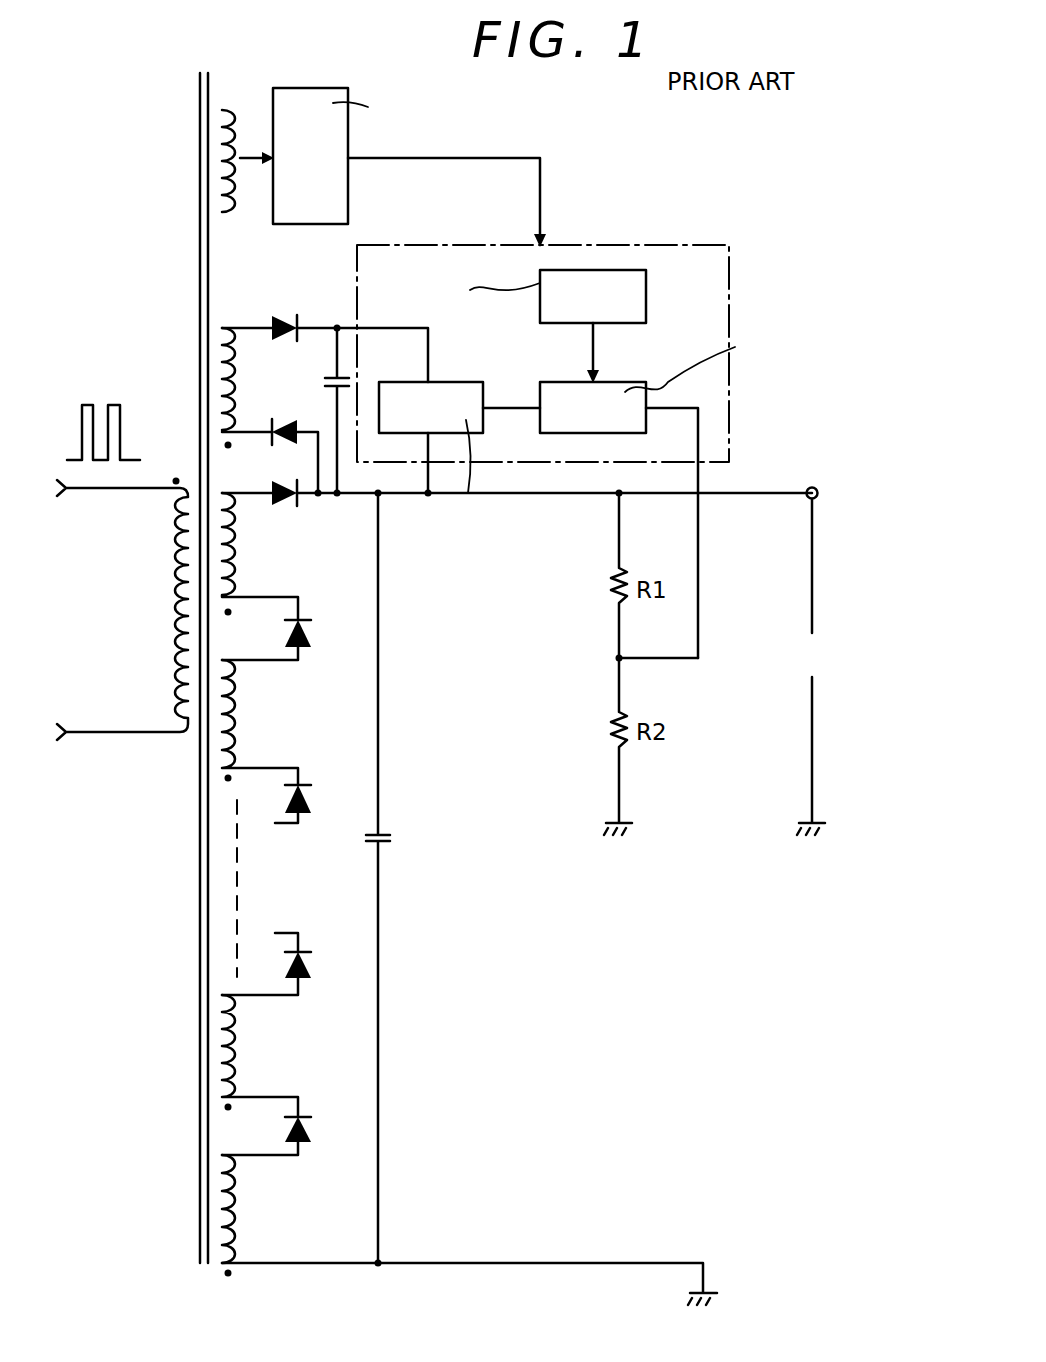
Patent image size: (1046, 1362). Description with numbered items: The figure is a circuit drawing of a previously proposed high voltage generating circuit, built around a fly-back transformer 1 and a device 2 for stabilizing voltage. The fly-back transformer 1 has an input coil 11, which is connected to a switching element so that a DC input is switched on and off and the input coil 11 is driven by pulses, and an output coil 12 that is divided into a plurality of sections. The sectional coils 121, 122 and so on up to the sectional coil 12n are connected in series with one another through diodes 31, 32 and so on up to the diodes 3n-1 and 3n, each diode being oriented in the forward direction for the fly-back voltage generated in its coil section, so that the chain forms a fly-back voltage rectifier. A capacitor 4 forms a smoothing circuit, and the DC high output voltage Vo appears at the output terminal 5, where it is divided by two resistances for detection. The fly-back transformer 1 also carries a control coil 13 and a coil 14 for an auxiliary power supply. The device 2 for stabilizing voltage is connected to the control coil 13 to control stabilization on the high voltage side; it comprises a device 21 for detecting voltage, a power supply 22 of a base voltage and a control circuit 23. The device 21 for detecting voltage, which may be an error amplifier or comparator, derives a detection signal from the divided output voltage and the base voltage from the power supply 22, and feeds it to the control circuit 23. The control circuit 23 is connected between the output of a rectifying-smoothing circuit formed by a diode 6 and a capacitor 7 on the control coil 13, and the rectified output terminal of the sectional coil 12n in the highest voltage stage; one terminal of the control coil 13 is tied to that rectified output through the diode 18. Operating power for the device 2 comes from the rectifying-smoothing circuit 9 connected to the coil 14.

The fly-back transformer 1 is at (194, 58).
The device for stabilizing voltage 2 is at (601, 412).
The diode 3n is at (279, 501).
The diode 3n-1 is at (309, 652).
The capacitor 4 is at (392, 838).
The output terminal 5 is at (818, 487).
The diode 6 is at (285, 315).
The capacitor 7 is at (349, 382).
The rectifying-smoothing circuit 9 is at (323, 106).
The input coil 11 is at (178, 609).
The output coil 12 is at (243, 1096).
The sectional coil 12n is at (233, 538).
The control coil 13 is at (233, 372).
The coil for auxiliary power supply 14 is at (236, 198).
The diode 18 is at (285, 447).
The device for detecting voltage 21 is at (627, 392).
The power supply of base voltage 22 is at (646, 299).
The control circuit 23 is at (470, 392).
The diode 31 is at (305, 1140).
The diode 32 is at (305, 971).
The sectional coil 121 is at (235, 1215).
The sectional coil 122 is at (235, 1055).